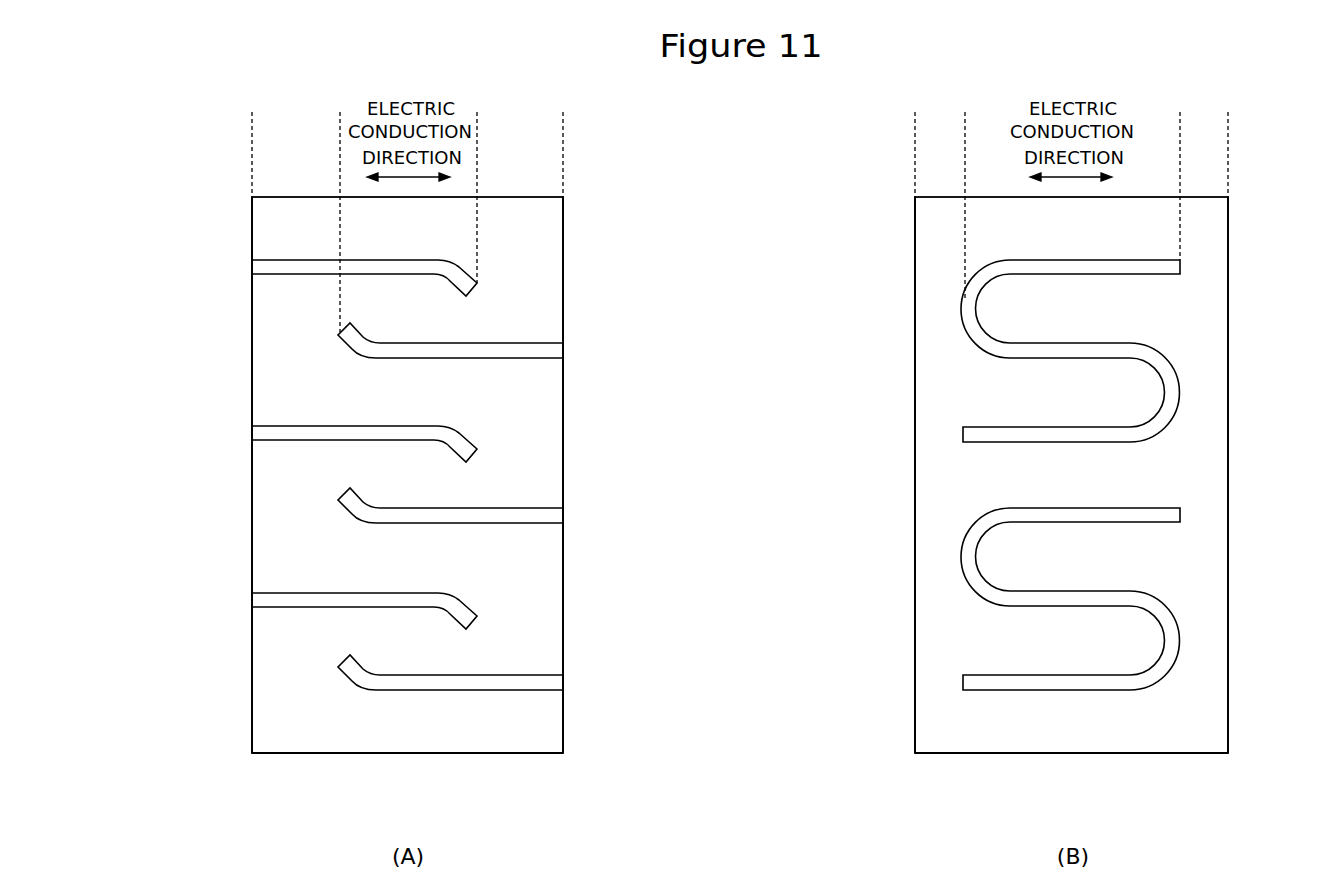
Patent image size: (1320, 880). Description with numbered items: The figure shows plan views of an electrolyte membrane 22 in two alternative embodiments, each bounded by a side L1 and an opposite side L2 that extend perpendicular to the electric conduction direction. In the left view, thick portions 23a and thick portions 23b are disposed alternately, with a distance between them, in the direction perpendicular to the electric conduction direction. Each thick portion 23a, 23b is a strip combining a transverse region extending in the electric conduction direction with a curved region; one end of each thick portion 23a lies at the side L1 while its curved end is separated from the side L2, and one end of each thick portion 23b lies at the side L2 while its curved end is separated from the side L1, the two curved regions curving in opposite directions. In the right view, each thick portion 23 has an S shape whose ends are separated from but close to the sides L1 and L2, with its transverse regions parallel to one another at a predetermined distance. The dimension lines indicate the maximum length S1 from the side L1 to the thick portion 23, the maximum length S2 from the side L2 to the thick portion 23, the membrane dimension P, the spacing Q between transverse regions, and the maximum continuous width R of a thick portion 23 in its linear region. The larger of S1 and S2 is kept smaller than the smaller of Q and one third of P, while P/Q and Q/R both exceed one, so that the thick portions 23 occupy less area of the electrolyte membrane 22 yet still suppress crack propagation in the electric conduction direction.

The electrolyte membrane 22 is at (528, 197).
The thick portion 23 is at (1180, 266).
The thick portion 23a is at (333, 275).
The thick portion 23b is at (485, 350).
The side L1 is at (252, 230).
The side L2 is at (563, 229).
The maximum length S1 is at (262, 117).
The maximum length S2 is at (487, 117).
The membrane width P is at (262, 769).
The distance between transverse regions Q is at (408, 284).
The maximum continuous width R is at (442, 320).